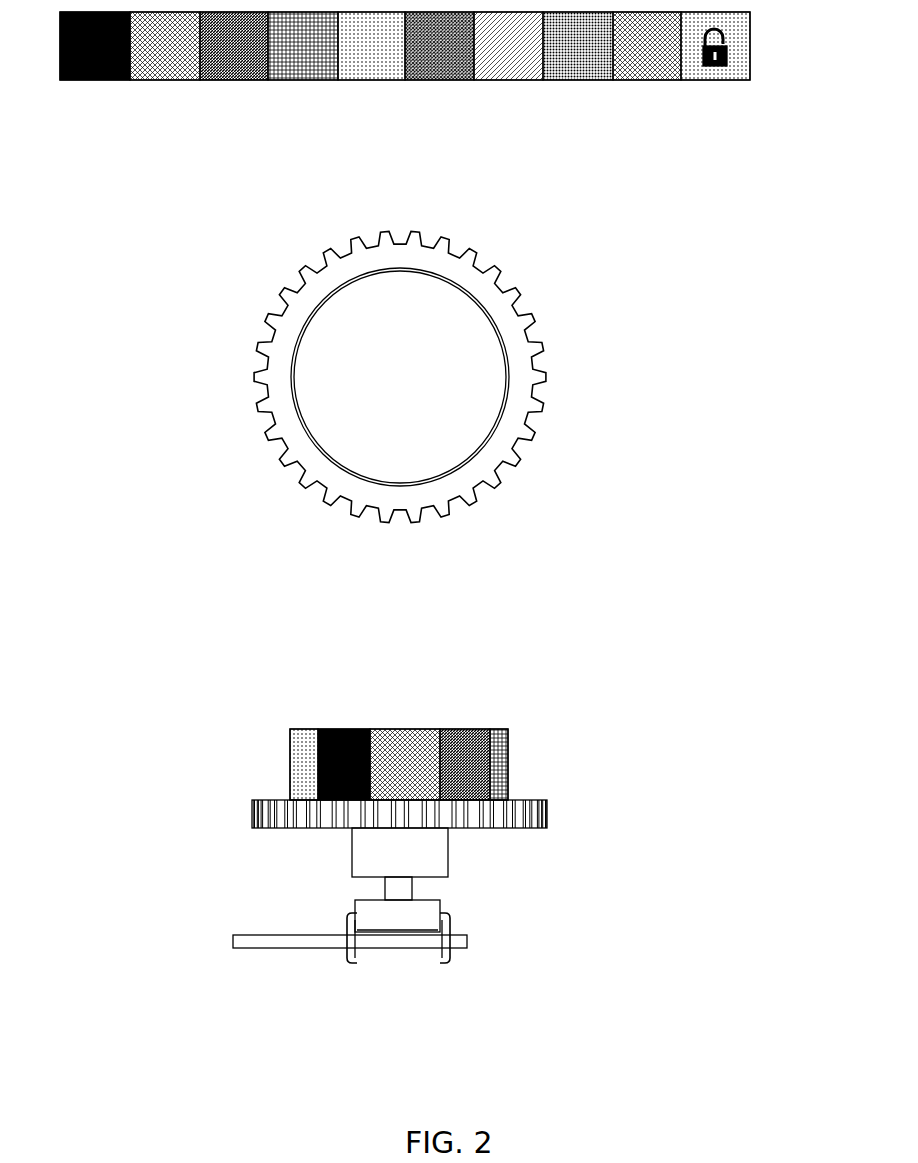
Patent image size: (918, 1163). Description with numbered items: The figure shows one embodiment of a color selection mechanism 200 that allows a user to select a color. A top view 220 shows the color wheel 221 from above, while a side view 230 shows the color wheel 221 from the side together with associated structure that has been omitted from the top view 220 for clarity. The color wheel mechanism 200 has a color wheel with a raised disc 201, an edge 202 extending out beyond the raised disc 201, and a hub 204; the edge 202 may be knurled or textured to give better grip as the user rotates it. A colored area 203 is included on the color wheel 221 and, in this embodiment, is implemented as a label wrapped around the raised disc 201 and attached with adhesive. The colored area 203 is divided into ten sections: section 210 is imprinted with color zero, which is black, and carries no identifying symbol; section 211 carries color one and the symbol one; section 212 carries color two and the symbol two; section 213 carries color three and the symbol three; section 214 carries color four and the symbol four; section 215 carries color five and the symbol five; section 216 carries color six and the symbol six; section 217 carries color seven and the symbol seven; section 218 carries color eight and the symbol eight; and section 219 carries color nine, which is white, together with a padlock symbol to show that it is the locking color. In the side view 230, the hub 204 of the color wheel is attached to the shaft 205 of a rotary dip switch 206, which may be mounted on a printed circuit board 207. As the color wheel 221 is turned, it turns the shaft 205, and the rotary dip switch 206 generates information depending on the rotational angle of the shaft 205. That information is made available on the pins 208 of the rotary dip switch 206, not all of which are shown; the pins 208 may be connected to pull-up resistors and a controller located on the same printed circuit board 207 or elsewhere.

The color selection mechanism 200 is at (705, 297).
The raised disc 201 is at (405, 392).
The edge 202 is at (543, 348).
The colored area 203 is at (752, 32).
The hub 204 is at (352, 857).
The shaft 205 is at (385, 890).
The rotary dip switch 206 is at (355, 907).
The printed circuit board 207 is at (322, 947).
The pins 208 is at (440, 957).
The section 210 is at (94, 80).
The section 211 is at (166, 80).
The section 212 is at (235, 80).
The section 213 is at (303, 80).
The section 214 is at (378, 80).
The section 215 is at (443, 80).
The section 216 is at (514, 80).
The section 217 is at (578, 80).
The section 218 is at (651, 80).
The section 219 is at (713, 80).
The top view 220 is at (552, 297).
The color wheel 221 is at (279, 347).
The side view 230 is at (331, 697).